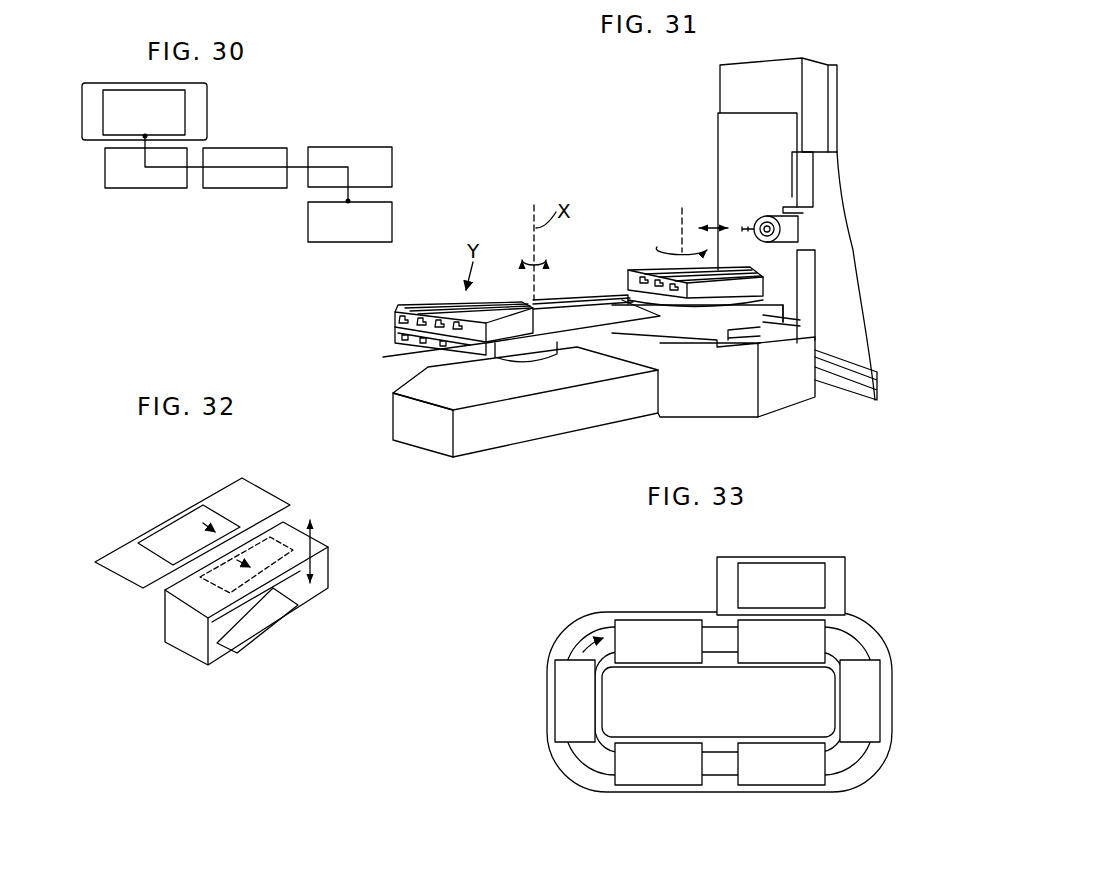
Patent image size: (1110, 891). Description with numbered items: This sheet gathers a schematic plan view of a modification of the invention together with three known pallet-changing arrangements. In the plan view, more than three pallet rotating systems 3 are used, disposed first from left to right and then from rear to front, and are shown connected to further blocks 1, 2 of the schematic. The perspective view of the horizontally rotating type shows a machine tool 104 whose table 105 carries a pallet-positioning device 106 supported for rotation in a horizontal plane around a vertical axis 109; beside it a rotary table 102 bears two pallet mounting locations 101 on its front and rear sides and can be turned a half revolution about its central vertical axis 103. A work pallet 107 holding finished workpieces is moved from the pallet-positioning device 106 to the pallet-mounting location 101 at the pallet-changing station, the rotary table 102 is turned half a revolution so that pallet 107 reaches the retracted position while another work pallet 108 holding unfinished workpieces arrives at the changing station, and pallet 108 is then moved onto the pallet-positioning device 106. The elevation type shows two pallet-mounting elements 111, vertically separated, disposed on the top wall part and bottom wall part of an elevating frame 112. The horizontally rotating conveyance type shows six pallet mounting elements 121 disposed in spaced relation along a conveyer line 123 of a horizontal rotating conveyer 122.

In FIG. 30, the host computer 1 is at (88, 110).
In FIG. 30, the display / control unit 2 is at (110, 120).
In FIG. 30, the pallet rotating systems 3 is at (398, 150).
In FIG. 31, the pallet mounting locations 101 is at (400, 327).
In FIG. 31, the rotary table 102 is at (407, 343).
In FIG. 31, the central vertical axis 103 is at (527, 240).
In FIG. 31, the machine tool 104 is at (708, 135).
In FIG. 31, the table 105 is at (713, 340).
In FIG. 32, the table 105 is at (128, 548).
In FIG. 33, the table 105 is at (725, 575).
In FIG. 31, the pallet-positioning device 106 is at (768, 302).
In FIG. 32, the pallet-positioning device 106 is at (197, 513).
In FIG. 33, the pallet-positioning device 106 is at (737, 587).
In FIG. 31, the work pallet 107 is at (647, 267).
In FIG. 31, the work pallet 108 is at (442, 297).
In FIG. 31, the vertical axis 109 is at (682, 232).
In FIG. 32, the pallet-mounting elements 111 is at (311, 539).
In FIG. 32, the elevating frame 112 is at (333, 570).
In FIG. 33, the pallet mounting elements 121 is at (555, 692).
In FIG. 33, the horizontal rotating conveyer 122 is at (568, 618).
In FIG. 33, the conveyer line 123 is at (592, 627).